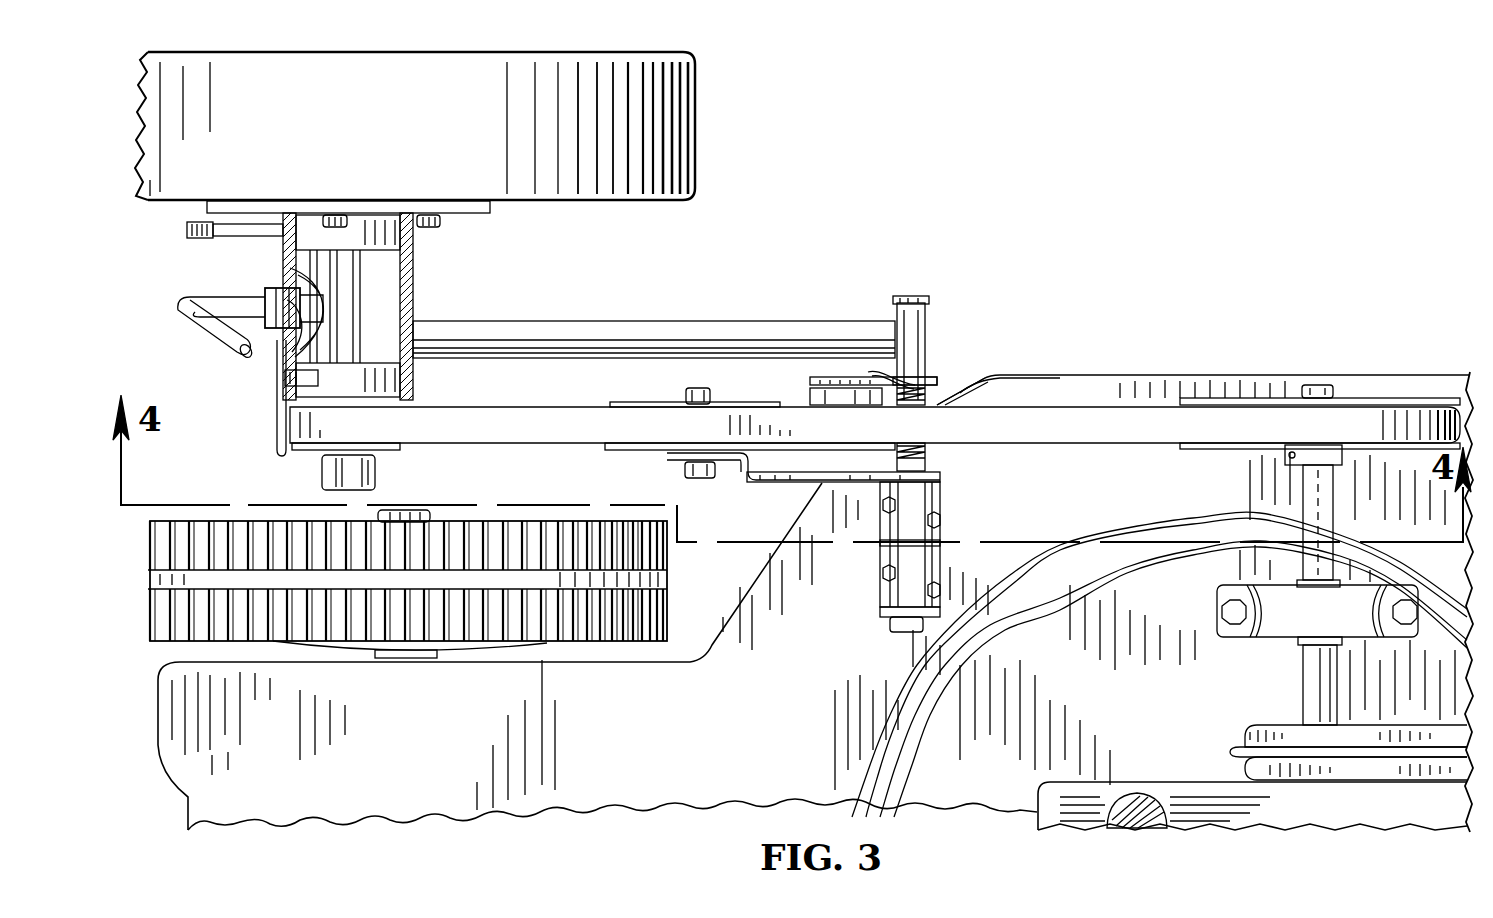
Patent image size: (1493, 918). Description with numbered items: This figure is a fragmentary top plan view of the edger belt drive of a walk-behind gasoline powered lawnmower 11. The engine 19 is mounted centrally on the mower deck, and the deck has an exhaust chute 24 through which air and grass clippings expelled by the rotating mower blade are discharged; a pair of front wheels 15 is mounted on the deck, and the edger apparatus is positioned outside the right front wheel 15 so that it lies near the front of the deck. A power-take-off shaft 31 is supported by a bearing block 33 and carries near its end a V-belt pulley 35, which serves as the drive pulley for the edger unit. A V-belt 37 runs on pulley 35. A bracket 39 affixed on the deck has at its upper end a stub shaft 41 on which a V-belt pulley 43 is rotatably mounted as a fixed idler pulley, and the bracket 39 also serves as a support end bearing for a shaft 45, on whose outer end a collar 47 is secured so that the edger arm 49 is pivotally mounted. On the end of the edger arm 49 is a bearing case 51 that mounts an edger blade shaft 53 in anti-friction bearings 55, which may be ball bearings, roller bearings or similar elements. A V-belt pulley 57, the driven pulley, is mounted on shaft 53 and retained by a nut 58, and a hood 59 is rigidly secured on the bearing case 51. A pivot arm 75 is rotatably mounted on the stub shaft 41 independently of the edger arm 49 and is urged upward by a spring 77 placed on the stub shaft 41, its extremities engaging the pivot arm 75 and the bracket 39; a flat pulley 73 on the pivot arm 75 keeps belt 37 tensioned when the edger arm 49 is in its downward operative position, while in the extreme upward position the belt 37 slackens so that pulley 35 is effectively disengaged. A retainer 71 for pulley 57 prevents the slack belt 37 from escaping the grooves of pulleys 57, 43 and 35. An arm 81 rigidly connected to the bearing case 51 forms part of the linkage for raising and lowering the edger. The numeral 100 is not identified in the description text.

The lawnmower 11 is at (1190, 377).
The front wheels 15 is at (668, 596).
The engine 19 is at (1393, 816).
The exhaust chute 24 is at (1043, 377).
The power-take-off shaft 31 is at (1303, 707).
The bearing block 33 is at (1255, 640).
The V-belt pulley 35 is at (1222, 449).
The V-belt 37 is at (1025, 437).
The bracket 39 is at (812, 484).
The stub shaft 41 is at (675, 470).
The V-belt pulley 43 is at (625, 450).
The shaft 45 is at (905, 560).
The collar 47 is at (926, 320).
The edger arm 49 is at (742, 320).
The bearing case 51 is at (426, 228).
The edger blade shaft 53 is at (400, 313).
The anti-friction bearings 55 is at (312, 228).
The V-belt pulley 57 is at (390, 452).
The nut 58 is at (320, 468).
The hood 59 is at (695, 118).
The retainer 71 is at (277, 422).
The flat pulley 73 is at (808, 405).
The pivot arm 75 is at (830, 378).
The spring 77 is at (935, 400).
The arm 81 is at (242, 296).
The base 100 is at (722, 716).